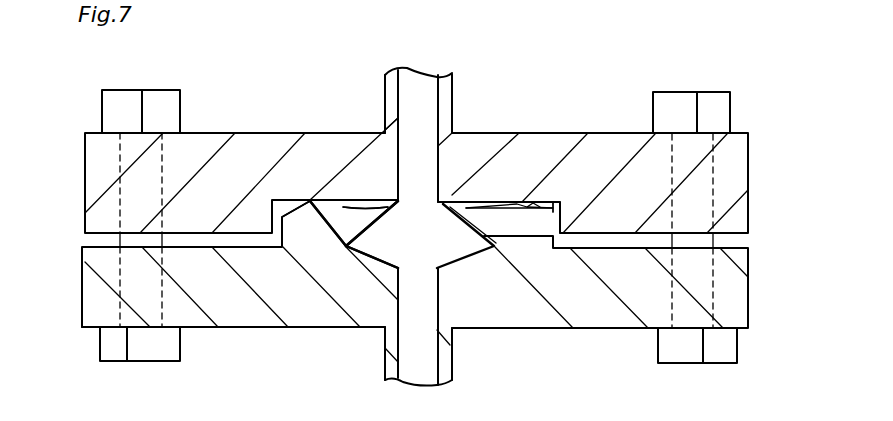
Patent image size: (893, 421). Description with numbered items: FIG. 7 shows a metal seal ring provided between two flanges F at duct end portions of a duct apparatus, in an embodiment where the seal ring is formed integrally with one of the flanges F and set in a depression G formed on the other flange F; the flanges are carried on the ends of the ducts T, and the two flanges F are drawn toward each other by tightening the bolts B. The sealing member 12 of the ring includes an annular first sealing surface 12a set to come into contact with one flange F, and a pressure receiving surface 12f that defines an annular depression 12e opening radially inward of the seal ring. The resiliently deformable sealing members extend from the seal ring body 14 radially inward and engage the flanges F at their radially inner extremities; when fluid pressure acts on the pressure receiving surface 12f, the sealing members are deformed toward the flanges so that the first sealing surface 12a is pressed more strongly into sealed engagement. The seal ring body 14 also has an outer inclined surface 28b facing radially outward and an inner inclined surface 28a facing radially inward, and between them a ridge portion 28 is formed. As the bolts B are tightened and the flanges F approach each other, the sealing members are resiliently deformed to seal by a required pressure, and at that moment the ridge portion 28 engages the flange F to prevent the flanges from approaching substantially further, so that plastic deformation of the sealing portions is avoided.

The sealing member 12 is at (461, 200).
The first sealing surface 12a is at (363, 203).
The annular depression 12e is at (385, 250).
The pressure receiving surface 12f is at (370, 235).
The seal ring body 14 is at (534, 200).
The ridge portion 28 is at (295, 205).
The inner inclined surface 28a is at (327, 200).
The outer inclined surface 28b is at (286, 203).
The bolt B is at (153, 97).
The flange F is at (208, 143).
The pipe T is at (452, 97).
The gap G is at (552, 203).